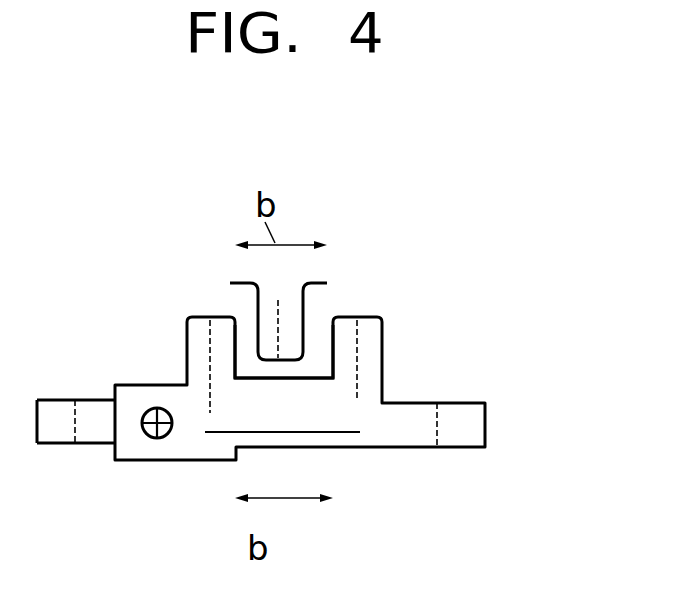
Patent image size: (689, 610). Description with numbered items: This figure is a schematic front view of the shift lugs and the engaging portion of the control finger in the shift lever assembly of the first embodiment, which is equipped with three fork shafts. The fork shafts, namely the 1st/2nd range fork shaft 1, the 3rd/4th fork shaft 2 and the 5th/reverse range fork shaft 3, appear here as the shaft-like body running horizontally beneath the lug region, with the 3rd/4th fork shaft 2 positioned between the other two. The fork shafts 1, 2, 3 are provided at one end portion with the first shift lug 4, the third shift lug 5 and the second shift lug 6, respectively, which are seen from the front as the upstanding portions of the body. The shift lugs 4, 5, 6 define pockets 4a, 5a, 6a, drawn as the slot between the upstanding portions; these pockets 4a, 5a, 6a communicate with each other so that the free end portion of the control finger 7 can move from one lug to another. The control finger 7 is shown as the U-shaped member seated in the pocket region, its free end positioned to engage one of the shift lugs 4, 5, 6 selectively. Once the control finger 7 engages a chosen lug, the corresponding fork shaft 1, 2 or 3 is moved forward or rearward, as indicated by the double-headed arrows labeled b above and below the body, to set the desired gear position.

The 1st/2nd range fork shaft 1 is at (301, 459).
The 3rd/4th fork shaft 2 is at (301, 459).
The 5th/reverse range fork shaft 3 is at (440, 432).
The first shift lug 4 is at (340, 388).
The third shift lug 5 is at (340, 388).
The second shift lug 6 is at (363, 367).
The pocket 4a is at (398, 311).
The pocket 5a is at (398, 311).
The pocket 6a is at (312, 358).
The control finger 7 is at (268, 332).